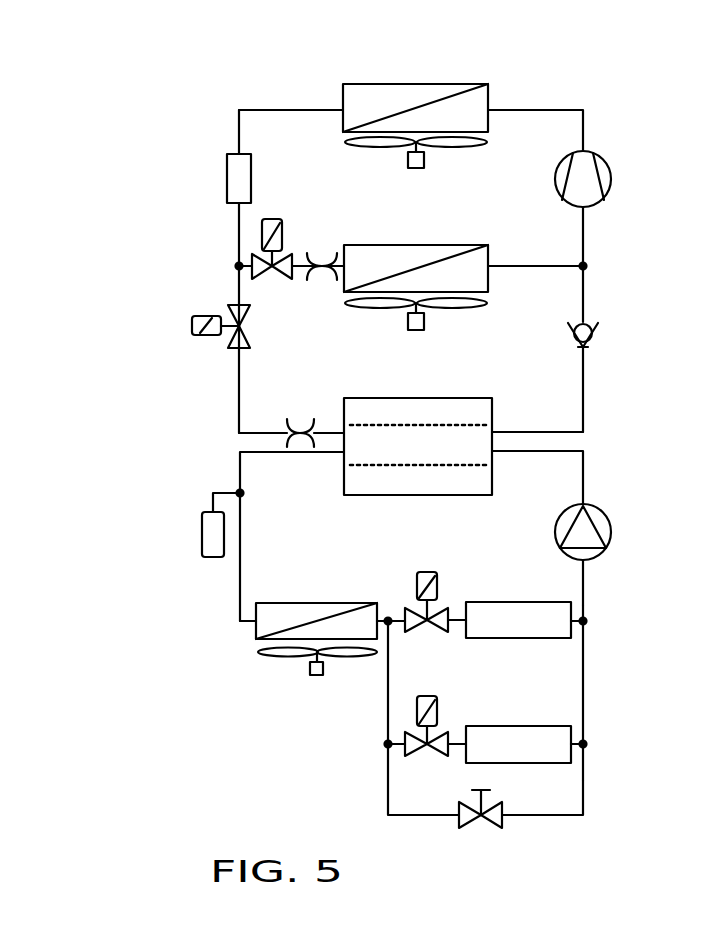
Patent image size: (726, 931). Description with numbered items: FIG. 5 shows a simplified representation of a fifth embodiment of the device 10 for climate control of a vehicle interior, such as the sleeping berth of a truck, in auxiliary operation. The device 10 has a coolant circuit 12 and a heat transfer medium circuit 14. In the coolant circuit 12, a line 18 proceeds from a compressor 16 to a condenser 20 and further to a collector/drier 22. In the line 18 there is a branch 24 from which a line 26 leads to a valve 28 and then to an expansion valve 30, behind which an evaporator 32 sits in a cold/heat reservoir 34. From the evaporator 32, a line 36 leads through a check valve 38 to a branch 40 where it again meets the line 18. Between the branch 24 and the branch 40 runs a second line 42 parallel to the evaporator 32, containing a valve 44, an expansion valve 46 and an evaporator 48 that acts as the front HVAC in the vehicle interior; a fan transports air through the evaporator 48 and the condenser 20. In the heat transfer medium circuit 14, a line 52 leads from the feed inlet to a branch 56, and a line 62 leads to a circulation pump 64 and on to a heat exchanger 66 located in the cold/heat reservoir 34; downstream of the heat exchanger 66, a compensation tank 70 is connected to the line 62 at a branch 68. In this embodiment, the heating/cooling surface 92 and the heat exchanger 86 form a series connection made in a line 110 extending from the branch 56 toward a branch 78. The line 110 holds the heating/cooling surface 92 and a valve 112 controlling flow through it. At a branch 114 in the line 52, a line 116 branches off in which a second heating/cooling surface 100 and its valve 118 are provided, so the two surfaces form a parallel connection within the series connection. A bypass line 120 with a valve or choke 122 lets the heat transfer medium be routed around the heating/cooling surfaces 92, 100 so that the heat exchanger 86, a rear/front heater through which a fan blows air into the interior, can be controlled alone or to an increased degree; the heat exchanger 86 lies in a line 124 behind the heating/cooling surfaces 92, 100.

The device 10 is at (233, 106).
The coolant circuit 12 is at (592, 242).
The heat transfer medium circuit 14 is at (600, 649).
The compressor 16 is at (602, 166).
The line 18 is at (549, 108).
The condenser 20 is at (440, 94).
The collector/drier 22 is at (232, 178).
The branch 24 is at (236, 267).
The line 26 is at (237, 390).
The valve 28 is at (226, 334).
The expansion valve 30 is at (300, 418).
The evaporator 32 is at (468, 420).
The cold/heat reservoir 34 is at (492, 413).
The line 36 is at (585, 378).
The check valve 38 is at (598, 329).
The branch 40 is at (587, 266).
The second line 42 is at (540, 266).
The valve 44 is at (268, 248).
The expansion valve 46 is at (322, 252).
The evaporator 48 is at (452, 262).
The line 52 is at (587, 803).
The branch 56 is at (587, 631).
The line 62 is at (586, 573).
The circulation pump 64 is at (603, 518).
The heat exchanger 66 is at (452, 468).
The branch 68 is at (237, 492).
The compensation tank 70 is at (208, 541).
The branch 78 is at (238, 621).
The heat exchanger 86 is at (316, 612).
The heating/cooling surface 92 is at (518, 611).
The second heating/cooling surface 100 is at (522, 742).
The line 110 is at (587, 612).
The valve 112 is at (424, 629).
The branch 114 is at (587, 749).
The line 116 is at (587, 742).
The valve 118 is at (410, 754).
The bypass line 120 is at (556, 816).
The valve or choke 122 is at (482, 829).
The line 124 is at (388, 616).